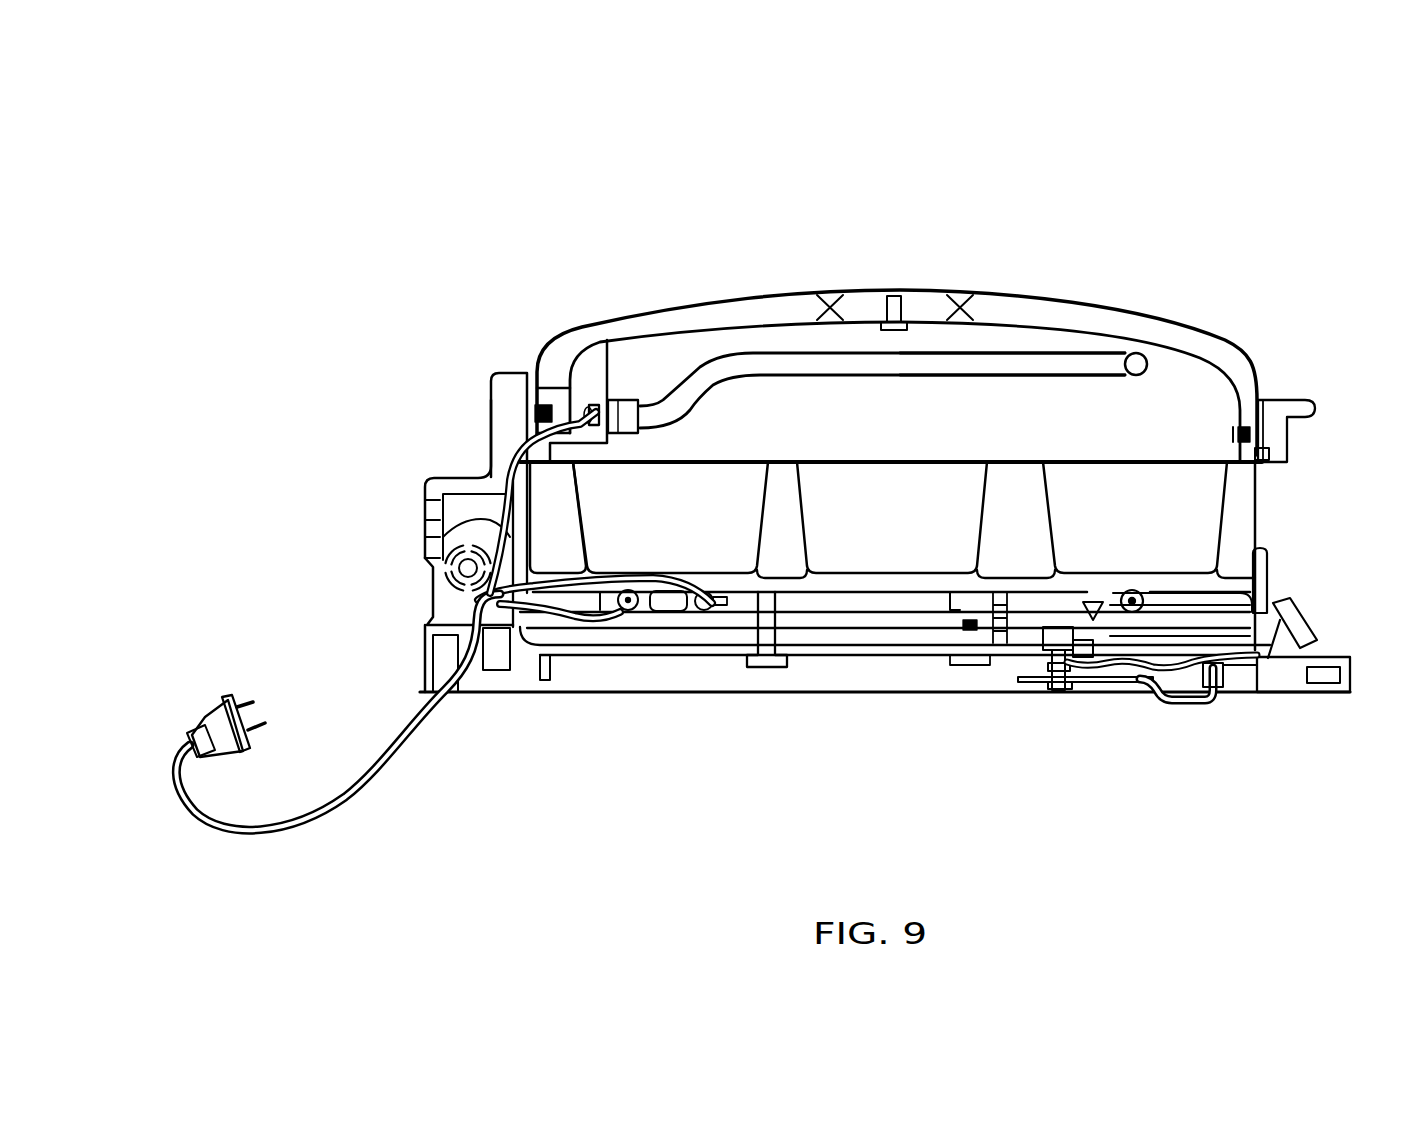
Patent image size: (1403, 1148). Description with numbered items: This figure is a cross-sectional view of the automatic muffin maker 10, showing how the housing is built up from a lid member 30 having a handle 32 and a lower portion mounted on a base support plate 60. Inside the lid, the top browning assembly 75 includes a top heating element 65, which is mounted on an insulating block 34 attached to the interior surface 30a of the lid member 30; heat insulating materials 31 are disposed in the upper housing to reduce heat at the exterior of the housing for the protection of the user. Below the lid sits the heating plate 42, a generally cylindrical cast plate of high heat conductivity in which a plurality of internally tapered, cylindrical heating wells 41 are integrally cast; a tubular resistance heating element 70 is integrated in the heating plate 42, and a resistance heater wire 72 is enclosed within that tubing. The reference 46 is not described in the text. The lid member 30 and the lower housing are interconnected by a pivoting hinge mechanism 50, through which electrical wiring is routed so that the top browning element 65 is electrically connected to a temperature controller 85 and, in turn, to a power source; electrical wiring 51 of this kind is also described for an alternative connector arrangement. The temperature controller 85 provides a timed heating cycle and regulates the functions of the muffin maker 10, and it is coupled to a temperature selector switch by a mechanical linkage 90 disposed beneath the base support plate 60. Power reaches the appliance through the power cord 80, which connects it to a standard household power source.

The automatic muffin maker 10 is at (897, 185).
The lid member 30 is at (1017, 292).
The interior surface 30a is at (778, 328).
The heat insulating materials 31 is at (833, 291).
The handle 32 is at (1291, 395).
The insulating block 34 is at (588, 370).
The heating wells 41 is at (800, 517).
The heating plate 42 is at (917, 580).
The tray compartment 46 is at (915, 553).
The pivoting hinge mechanism 50 is at (458, 446).
The electrical wiring 51 is at (425, 540).
The base support plate 60 is at (739, 716).
The top heating element 65 is at (1097, 360).
The tubular resistance heating element 70 is at (693, 614).
The resistance heater wire 72 is at (1122, 590).
The top browning assembly 75 is at (666, 358).
The power cord 80 is at (333, 813).
The temperature controller 85 is at (1070, 647).
The mechanical linkage 90 is at (1198, 722).